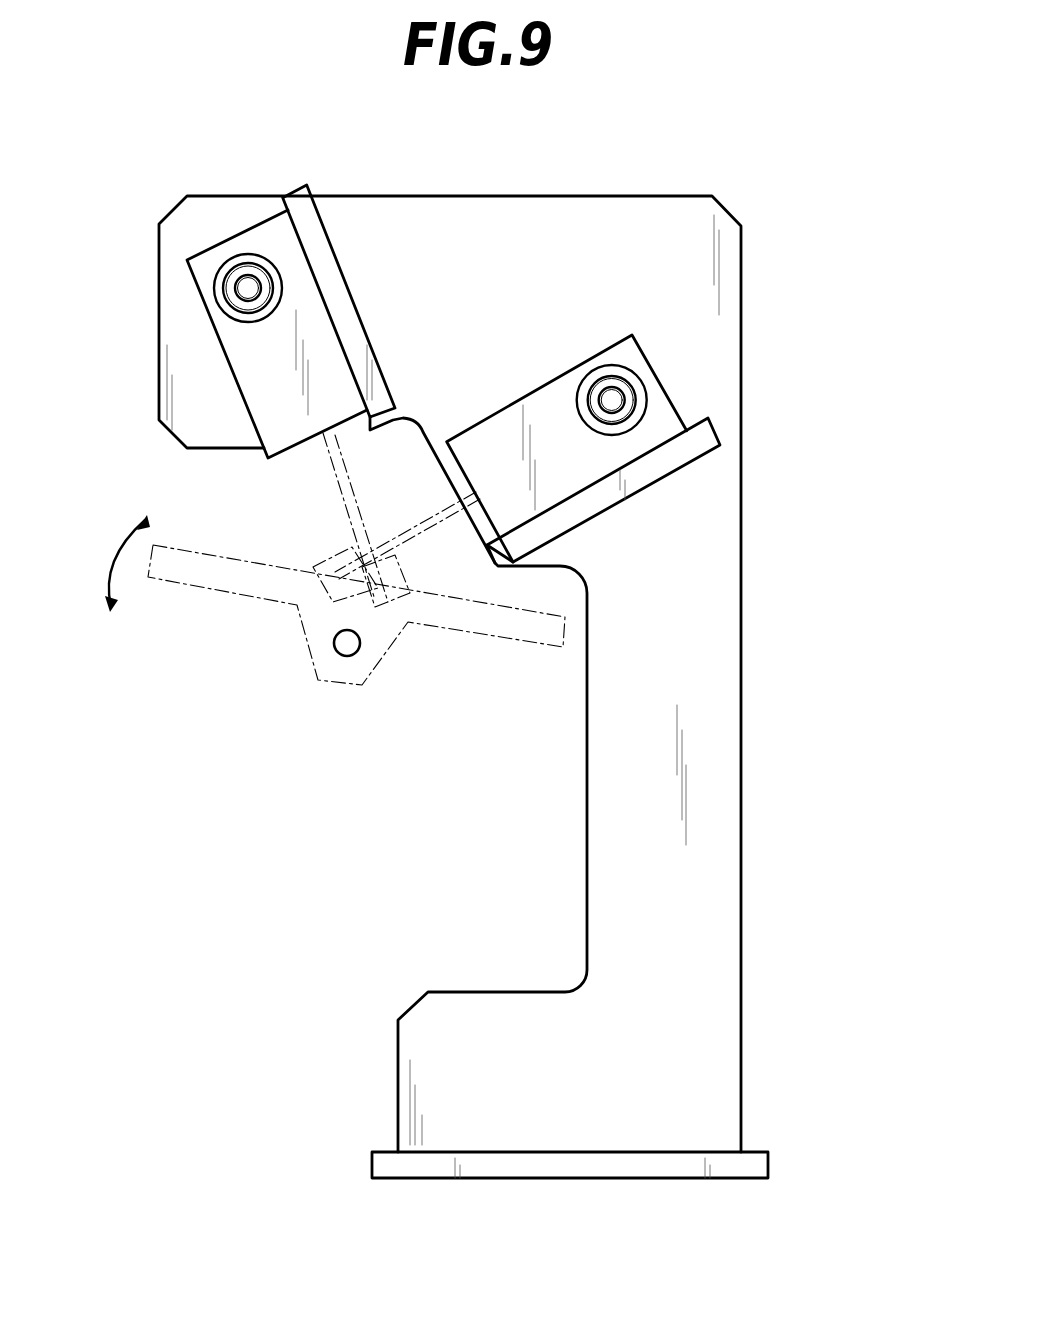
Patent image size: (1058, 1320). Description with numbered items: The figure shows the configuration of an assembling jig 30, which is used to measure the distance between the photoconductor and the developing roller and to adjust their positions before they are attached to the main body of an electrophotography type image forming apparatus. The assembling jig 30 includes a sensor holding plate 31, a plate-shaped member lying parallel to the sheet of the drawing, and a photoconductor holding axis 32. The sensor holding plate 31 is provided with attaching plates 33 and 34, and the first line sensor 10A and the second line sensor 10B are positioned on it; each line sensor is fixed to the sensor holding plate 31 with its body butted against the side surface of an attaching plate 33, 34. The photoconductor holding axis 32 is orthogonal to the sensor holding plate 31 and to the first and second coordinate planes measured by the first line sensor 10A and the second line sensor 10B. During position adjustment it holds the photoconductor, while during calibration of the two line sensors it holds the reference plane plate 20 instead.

The assembling jig 30 is at (531, 658).
The sensor holding plate 31 is at (720, 902).
The photoconductor holding axis 32 is at (338, 648).
The attaching plate 33 is at (324, 256).
The attaching plate 34 is at (677, 457).
The first line sensor 10A is at (207, 297).
The second line sensor 10B is at (663, 385).
The reference plane plate 20 is at (195, 573).